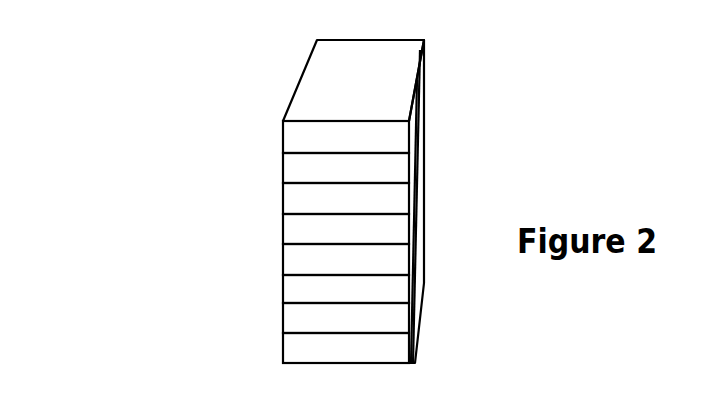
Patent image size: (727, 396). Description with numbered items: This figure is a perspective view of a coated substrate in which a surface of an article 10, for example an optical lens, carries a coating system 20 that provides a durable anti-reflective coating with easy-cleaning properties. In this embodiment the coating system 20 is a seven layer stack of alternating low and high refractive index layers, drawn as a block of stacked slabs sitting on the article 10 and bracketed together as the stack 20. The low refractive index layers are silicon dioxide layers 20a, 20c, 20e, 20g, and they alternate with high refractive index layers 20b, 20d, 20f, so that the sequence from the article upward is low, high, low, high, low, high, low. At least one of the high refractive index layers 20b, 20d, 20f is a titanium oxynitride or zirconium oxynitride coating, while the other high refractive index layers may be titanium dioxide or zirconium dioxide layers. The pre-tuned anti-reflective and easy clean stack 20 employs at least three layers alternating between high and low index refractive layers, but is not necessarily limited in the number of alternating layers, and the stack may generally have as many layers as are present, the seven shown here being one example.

The coating system 20 is at (127, 120).
The low refractive index silicon dioxide layer 20g is at (283, 141).
The high refractive index layer 20f is at (283, 171).
The low refractive index silicon dioxide layer 20e is at (283, 201).
The high refractive index layer 20d is at (283, 232).
The low refractive index silicon dioxide layer 20c is at (283, 262).
The high refractive index layer 20b is at (283, 292).
The low refractive index silicon dioxide layer 20a is at (283, 324).
The article 10 is at (283, 356).